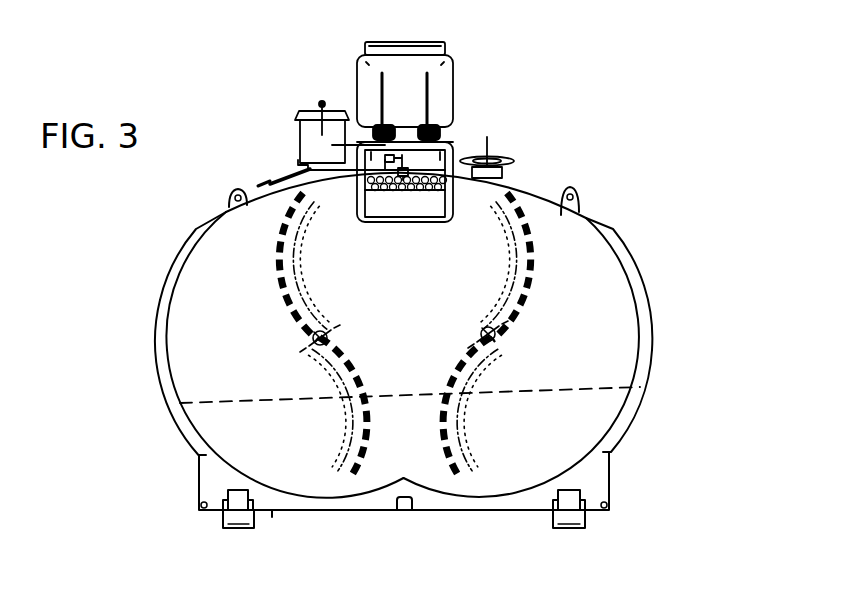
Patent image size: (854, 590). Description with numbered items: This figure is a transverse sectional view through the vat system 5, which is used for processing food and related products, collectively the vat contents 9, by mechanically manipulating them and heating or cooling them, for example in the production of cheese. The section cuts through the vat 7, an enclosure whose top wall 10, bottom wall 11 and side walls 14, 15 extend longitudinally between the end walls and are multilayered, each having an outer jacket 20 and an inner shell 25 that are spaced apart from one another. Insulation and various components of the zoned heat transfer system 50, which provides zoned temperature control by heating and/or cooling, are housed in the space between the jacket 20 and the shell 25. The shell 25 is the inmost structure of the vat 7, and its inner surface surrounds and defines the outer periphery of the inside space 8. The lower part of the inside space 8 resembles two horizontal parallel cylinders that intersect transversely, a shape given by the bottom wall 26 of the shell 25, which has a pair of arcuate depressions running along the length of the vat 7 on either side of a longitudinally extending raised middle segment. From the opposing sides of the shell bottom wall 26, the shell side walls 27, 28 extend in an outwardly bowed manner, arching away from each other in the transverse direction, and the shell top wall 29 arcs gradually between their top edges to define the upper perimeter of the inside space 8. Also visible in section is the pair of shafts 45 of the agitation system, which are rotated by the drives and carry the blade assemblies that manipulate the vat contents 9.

The vat system 5 is at (502, 70).
The vat 7 is at (258, 182).
The inside space 8 is at (560, 219).
The vat contents 9 is at (300, 412).
The top wall 10 is at (530, 183).
The bottom wall 11 is at (512, 511).
The side wall 14 is at (657, 303).
The side wall 15 is at (182, 393).
The outer jacket 20 is at (158, 271).
The inner shell 25 is at (163, 331).
The bottom wall of the shell 26 is at (382, 481).
The shell side wall 27 is at (635, 300).
The shell side wall 28 is at (176, 286).
The shell top wall 29 is at (340, 181).
The shafts 45 is at (337, 327).
The zoned heat transfer system 50 is at (605, 450).